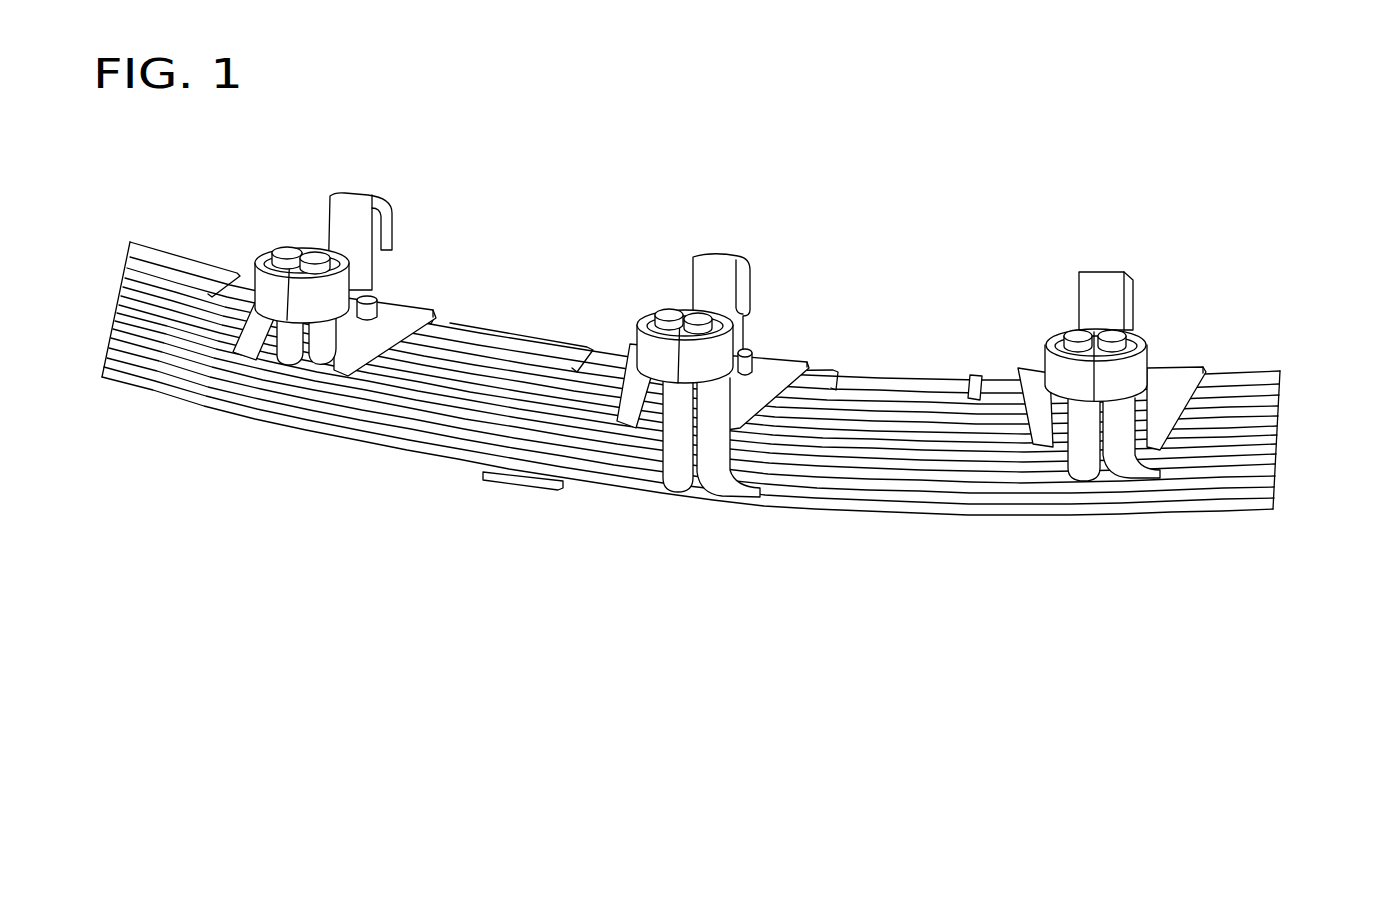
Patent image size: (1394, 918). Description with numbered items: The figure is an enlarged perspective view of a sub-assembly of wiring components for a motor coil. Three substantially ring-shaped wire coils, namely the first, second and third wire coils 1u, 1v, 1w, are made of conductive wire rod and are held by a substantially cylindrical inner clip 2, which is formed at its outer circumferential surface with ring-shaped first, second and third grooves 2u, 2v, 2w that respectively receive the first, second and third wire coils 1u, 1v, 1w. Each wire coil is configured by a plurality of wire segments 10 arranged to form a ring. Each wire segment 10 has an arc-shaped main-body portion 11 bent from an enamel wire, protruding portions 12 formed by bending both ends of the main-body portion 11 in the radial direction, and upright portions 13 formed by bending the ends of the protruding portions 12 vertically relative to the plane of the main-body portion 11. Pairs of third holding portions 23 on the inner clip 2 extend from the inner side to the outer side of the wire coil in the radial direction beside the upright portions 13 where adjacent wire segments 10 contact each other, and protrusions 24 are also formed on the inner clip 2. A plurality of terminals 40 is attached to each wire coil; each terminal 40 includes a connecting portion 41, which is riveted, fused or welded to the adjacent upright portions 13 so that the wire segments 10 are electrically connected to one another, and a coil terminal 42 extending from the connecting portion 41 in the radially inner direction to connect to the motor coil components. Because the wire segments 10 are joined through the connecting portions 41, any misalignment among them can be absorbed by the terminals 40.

The first wire coil 1u is at (108, 310).
The second wire coil 1v is at (113, 283).
The third wire coil 1w is at (100, 350).
The inner clip 2 is at (882, 367).
The first groove 2u is at (400, 368).
The second groove 2v is at (1106, 466).
The third groove 2w is at (697, 482).
The wire segment 10 is at (1016, 450).
The main-body portion 11 is at (1228, 450).
The protruding portion 12 is at (1142, 460).
The upright portion 13 is at (1078, 334).
The third holding portion 23 is at (630, 408).
The protrusion 24 is at (373, 307).
The terminal 40 is at (364, 192).
The connecting portion 41 is at (640, 326).
The coil terminal 42 is at (752, 288).